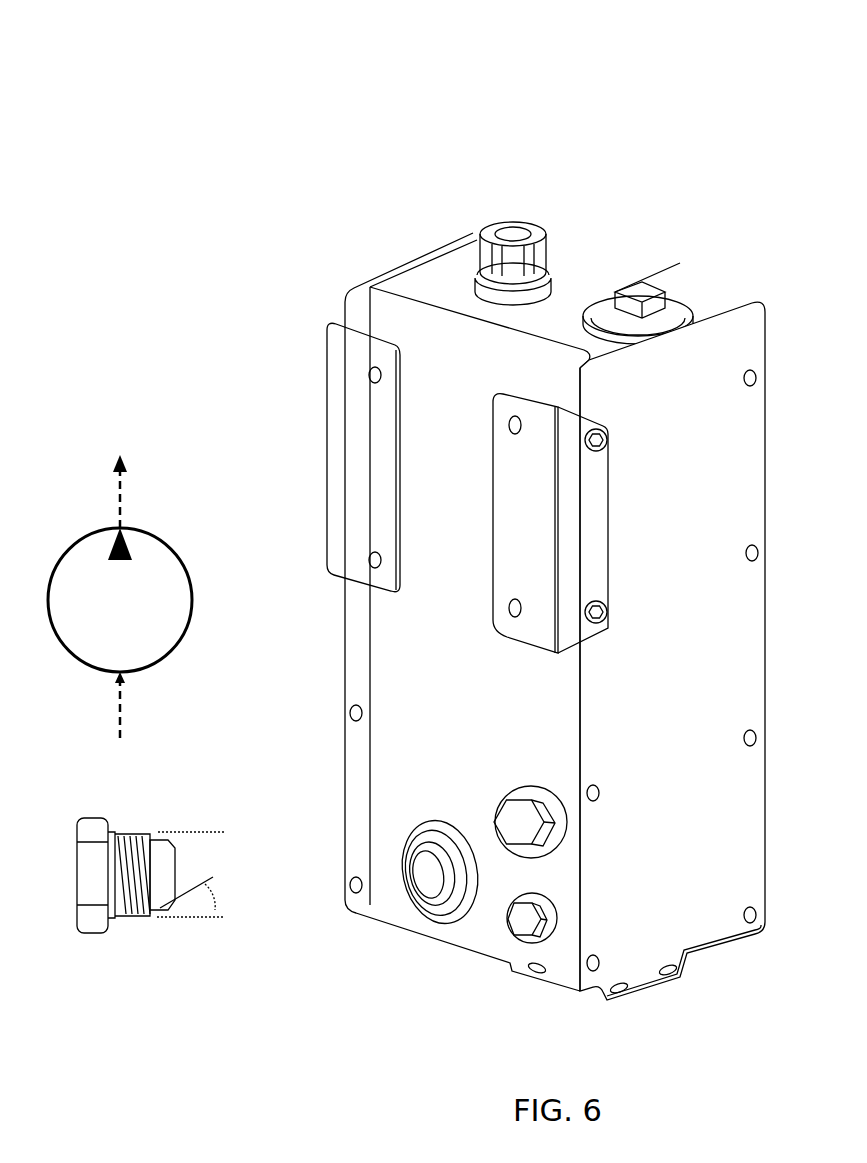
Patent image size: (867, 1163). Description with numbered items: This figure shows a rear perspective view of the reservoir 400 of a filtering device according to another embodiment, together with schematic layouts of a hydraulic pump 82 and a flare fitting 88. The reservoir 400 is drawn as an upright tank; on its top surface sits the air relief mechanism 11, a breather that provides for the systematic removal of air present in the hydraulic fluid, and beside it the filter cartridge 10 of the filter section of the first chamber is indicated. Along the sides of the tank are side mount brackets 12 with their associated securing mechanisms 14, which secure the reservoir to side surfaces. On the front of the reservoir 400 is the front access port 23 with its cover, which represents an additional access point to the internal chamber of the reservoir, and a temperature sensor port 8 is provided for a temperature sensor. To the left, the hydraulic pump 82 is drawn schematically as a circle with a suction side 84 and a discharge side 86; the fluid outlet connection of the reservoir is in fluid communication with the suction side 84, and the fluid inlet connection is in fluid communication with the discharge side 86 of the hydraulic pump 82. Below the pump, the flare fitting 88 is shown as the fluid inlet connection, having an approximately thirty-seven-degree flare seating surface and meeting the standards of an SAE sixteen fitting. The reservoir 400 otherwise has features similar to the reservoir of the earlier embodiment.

The reservoir 400 is at (638, 56).
The air relief mechanism 11 is at (535, 240).
The filter cartridge 10 is at (646, 292).
The side mount brackets 12 is at (340, 442).
The securing mechanisms 14 is at (600, 440).
The front access port 23 is at (537, 832).
The temperature sensor port 8 is at (520, 928).
The hydraulic pump 82 is at (195, 604).
The discharge side 86 is at (122, 522).
The suction side 84 is at (124, 678).
The flare fitting 88 is at (180, 820).